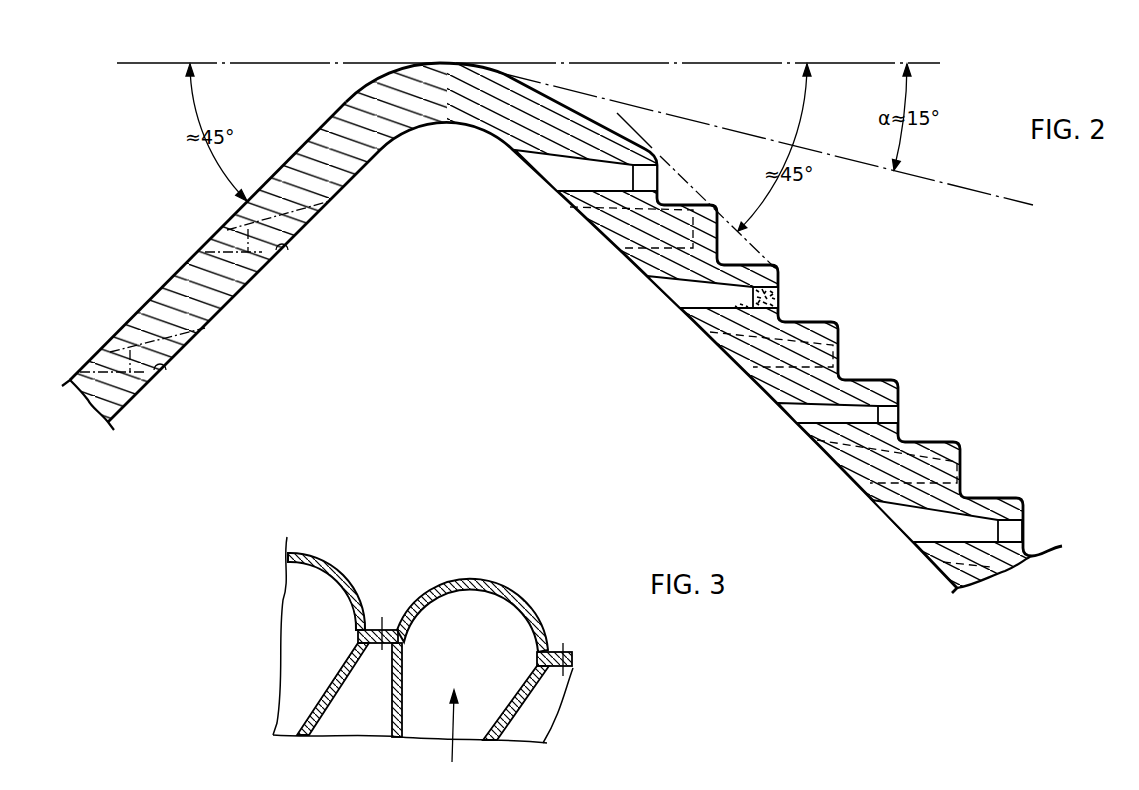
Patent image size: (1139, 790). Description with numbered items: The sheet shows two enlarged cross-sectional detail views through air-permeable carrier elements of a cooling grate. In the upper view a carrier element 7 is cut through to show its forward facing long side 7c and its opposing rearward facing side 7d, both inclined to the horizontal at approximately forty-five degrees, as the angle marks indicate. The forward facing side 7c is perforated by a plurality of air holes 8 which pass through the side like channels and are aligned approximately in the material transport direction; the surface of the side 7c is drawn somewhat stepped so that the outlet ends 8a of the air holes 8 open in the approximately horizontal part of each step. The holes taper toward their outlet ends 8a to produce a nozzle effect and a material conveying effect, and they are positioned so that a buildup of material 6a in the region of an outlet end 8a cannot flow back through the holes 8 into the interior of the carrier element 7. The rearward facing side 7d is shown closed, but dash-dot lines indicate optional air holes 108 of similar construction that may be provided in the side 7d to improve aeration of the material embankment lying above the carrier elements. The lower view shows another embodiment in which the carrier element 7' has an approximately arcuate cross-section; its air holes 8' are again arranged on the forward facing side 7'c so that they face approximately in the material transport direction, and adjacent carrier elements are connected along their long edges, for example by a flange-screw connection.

In FIG. 2, the air-permeable carrier element 7 is at (569, 395).
In FIG. 2, the rearward facing side 7d is at (187, 275).
In FIG. 2, the forward facing long side 7c is at (838, 337).
In FIG. 2, the air holes 8 is at (780, 340).
In FIG. 2, the outlet ends 8a is at (779, 300).
In FIG. 2, the buildup of material 6a is at (779, 292).
In FIG. 2, the air holes 108 is at (290, 251).
In FIG. 3, the air-permeable carrier element 7' is at (418, 572).
In FIG. 3, the forward facing side 7'c is at (442, 639).
In FIG. 3, the air holes 8' is at (477, 613).